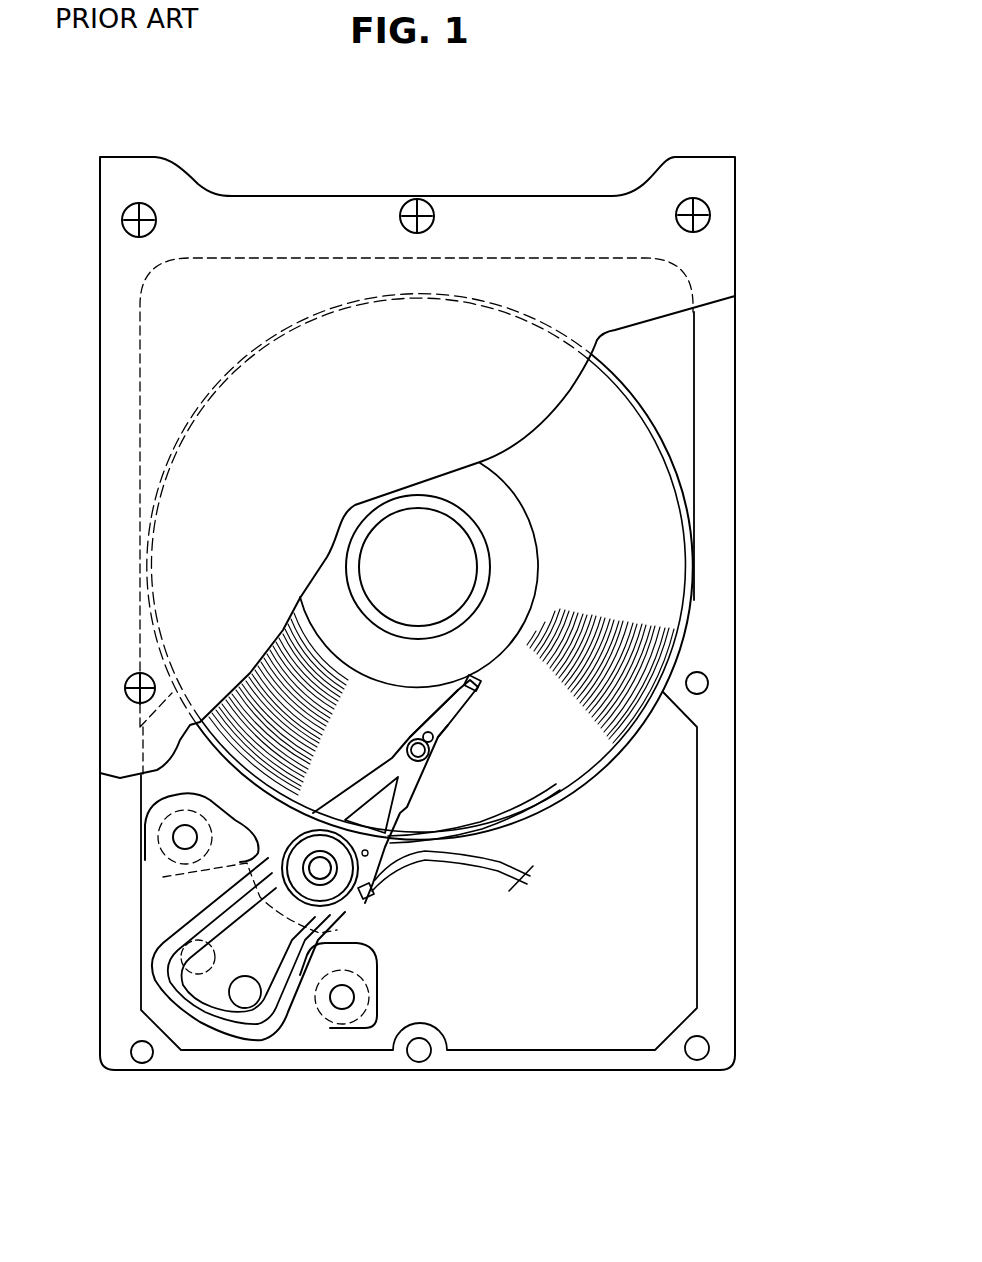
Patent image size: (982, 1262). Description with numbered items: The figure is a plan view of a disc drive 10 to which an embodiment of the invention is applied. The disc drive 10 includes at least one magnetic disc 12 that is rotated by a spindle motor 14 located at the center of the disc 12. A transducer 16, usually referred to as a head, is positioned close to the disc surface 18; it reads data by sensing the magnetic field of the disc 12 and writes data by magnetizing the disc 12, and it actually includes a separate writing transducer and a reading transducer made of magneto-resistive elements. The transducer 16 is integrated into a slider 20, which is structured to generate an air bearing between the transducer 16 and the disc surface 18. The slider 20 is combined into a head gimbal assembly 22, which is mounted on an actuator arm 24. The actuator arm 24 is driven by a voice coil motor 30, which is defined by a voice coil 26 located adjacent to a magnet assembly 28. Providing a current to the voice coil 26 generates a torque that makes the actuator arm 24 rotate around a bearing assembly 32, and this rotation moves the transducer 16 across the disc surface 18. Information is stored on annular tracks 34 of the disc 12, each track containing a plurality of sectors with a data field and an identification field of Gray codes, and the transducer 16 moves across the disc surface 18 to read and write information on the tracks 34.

The disc drive 10 is at (572, 138).
The magnetic disc 12 is at (651, 506).
The spindle motor 14 is at (397, 546).
The transducer 16 is at (477, 686).
The disc surface 18 is at (641, 583).
The slider 20 is at (453, 710).
The head gimbal assembly 22 is at (409, 810).
The actuator arm 24 is at (237, 887).
The voice coil 26 is at (173, 953).
The magnet assembly 28 is at (183, 898).
The voice coil motor 30 is at (292, 1006).
The bearing assembly 32 is at (326, 874).
The annular tracks 34 is at (283, 680).